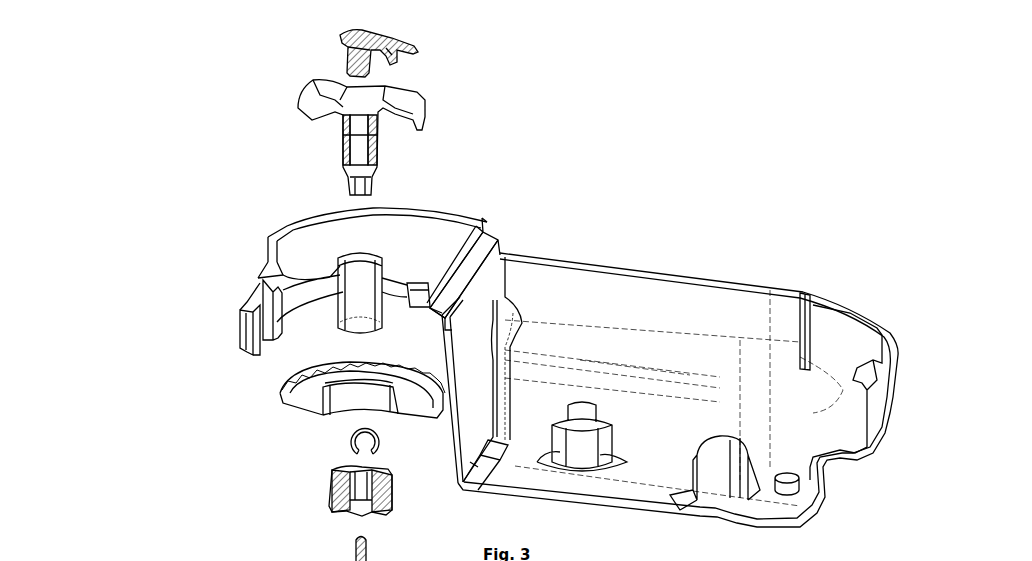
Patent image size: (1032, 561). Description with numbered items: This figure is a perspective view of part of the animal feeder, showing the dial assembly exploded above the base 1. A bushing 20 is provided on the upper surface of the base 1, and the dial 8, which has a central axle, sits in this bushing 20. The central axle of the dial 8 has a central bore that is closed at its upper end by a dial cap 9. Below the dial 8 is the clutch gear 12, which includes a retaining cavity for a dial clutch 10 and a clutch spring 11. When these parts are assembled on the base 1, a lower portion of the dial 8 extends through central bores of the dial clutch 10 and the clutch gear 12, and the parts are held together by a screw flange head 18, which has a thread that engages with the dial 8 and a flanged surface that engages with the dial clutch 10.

The base 1 is at (241, 294).
The dial 8 is at (296, 99).
The dial cap 9 is at (338, 36).
The dial clutch 10 is at (328, 487).
The clutch spring 11 is at (348, 436).
The clutch gear 12 is at (279, 391).
The screw flange head 18 is at (353, 552).
The bushing 20 is at (396, 273).